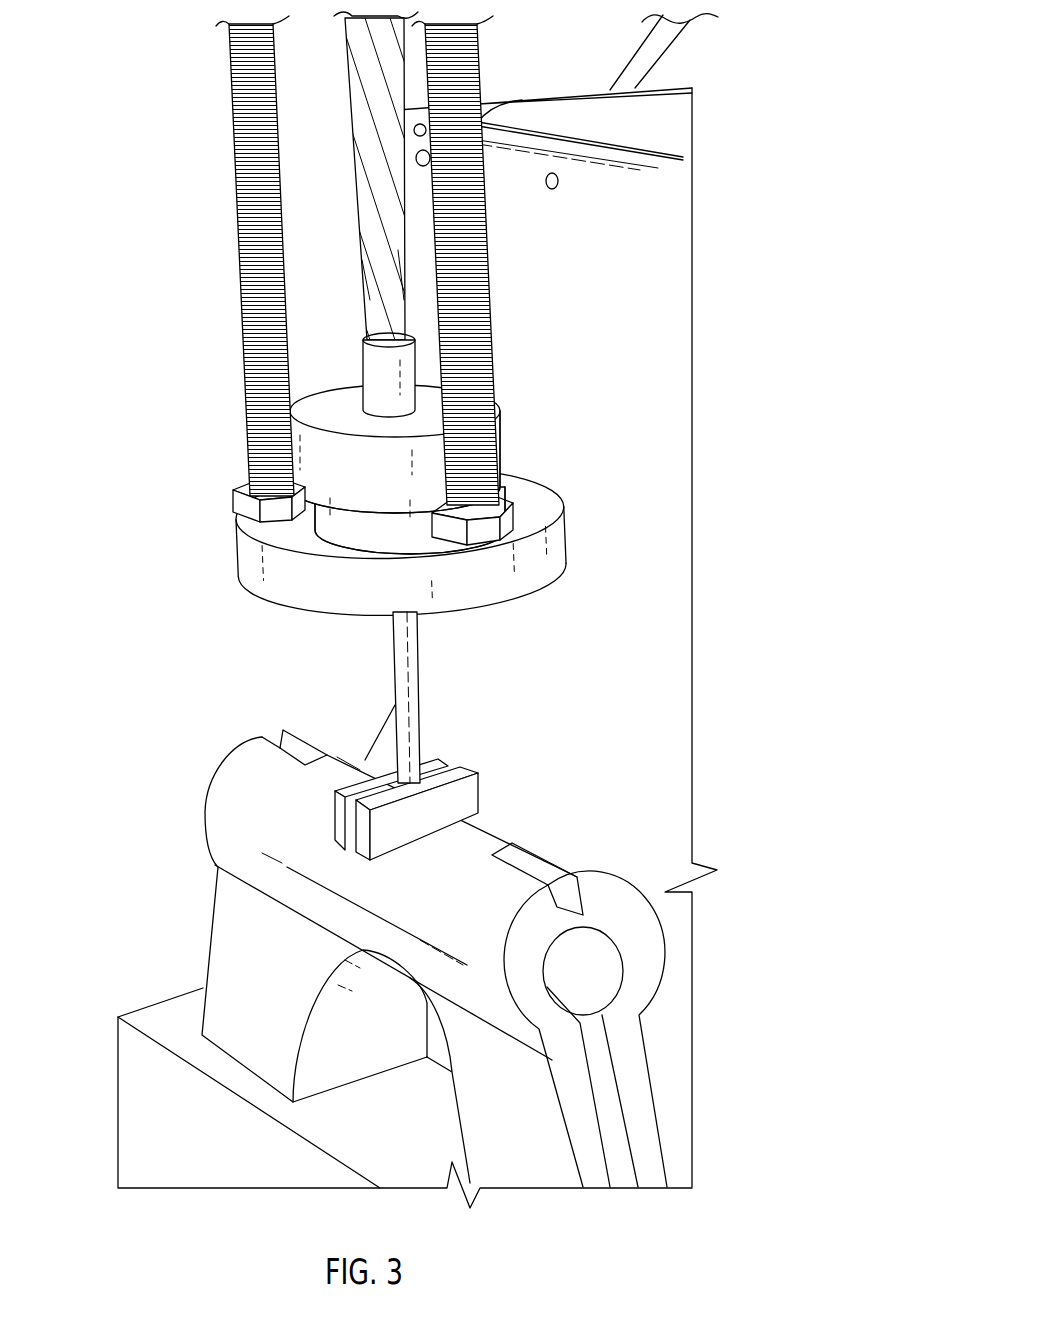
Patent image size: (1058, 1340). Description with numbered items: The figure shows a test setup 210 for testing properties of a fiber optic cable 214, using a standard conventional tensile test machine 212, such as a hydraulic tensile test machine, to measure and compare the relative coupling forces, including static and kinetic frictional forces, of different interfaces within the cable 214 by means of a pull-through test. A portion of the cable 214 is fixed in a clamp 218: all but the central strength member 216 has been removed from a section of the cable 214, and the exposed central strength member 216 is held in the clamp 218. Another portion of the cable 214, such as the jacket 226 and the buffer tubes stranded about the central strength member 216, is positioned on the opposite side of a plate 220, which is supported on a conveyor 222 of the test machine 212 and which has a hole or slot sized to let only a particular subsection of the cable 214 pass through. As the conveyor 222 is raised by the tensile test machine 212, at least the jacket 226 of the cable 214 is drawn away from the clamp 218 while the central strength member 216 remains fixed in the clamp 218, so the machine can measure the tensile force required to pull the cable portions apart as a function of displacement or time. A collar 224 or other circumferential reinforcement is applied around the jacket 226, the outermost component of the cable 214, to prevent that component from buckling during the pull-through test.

The test setup 210 is at (418, 610).
The tensile test machine 212 is at (603, 140).
The fiber optic cable 214 is at (307, 190).
The central strength member 216 is at (377, 653).
The clamp 218 is at (423, 760).
The plate 220 is at (397, 412).
The conveyor 222 is at (262, 557).
The collar 224 is at (380, 367).
The jacket 226 is at (372, 296).